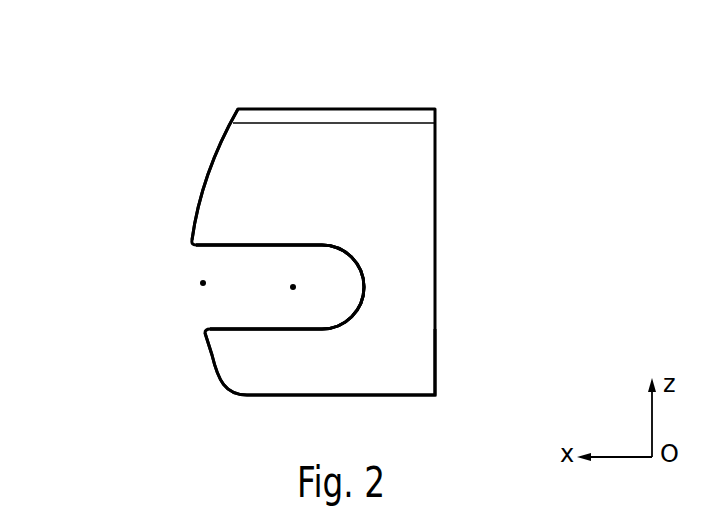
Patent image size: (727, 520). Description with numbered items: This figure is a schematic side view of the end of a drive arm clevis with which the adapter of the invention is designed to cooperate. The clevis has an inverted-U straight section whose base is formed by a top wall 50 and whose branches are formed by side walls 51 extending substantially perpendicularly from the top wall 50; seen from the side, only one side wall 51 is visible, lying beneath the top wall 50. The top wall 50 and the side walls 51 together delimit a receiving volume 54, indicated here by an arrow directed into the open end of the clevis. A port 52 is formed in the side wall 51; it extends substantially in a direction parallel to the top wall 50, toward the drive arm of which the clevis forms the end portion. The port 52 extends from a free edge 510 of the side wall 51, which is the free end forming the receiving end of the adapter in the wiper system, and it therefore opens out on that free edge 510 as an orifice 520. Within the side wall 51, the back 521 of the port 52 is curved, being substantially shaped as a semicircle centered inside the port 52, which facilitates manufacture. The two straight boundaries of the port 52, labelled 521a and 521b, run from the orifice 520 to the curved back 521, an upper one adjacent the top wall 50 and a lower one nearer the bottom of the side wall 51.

The top wall 50 is at (382, 110).
The side wall 51 is at (402, 320).
The free edge 510 is at (215, 153).
The receiving volume 54 is at (186, 184).
The port 52 is at (293, 287).
The back of the port 521 is at (362, 283).
The orifice 520 is at (203, 283).
The upper slot edge 521a is at (190, 240).
The lower slot edge 521b is at (197, 332).